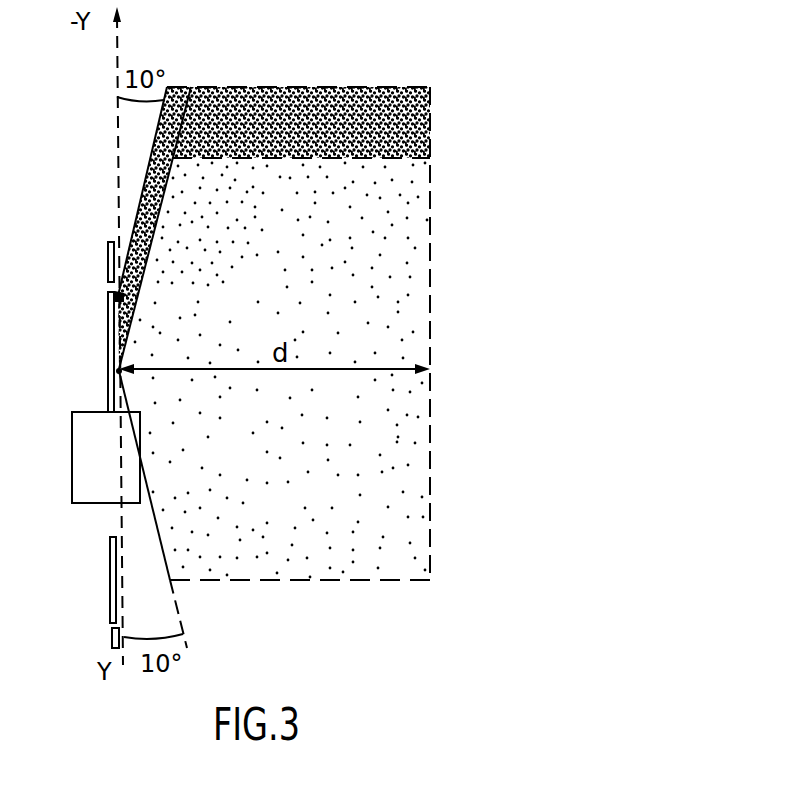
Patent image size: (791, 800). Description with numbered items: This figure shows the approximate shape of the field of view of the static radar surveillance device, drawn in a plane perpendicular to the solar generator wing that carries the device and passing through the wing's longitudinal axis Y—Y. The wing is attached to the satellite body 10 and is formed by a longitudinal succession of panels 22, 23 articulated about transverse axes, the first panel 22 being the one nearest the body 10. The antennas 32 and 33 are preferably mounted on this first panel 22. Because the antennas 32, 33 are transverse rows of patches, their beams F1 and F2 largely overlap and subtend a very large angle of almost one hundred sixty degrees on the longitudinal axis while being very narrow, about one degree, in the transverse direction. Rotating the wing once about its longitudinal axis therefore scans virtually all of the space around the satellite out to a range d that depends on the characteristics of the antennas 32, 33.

The body 10 is at (80, 503).
The first panel 22 is at (108, 340).
The panel 23 is at (108, 262).
The antenna 32 is at (124, 297).
The antenna 33 is at (122, 377).
The beam F1 is at (346, 88).
The beam F2 is at (368, 158).